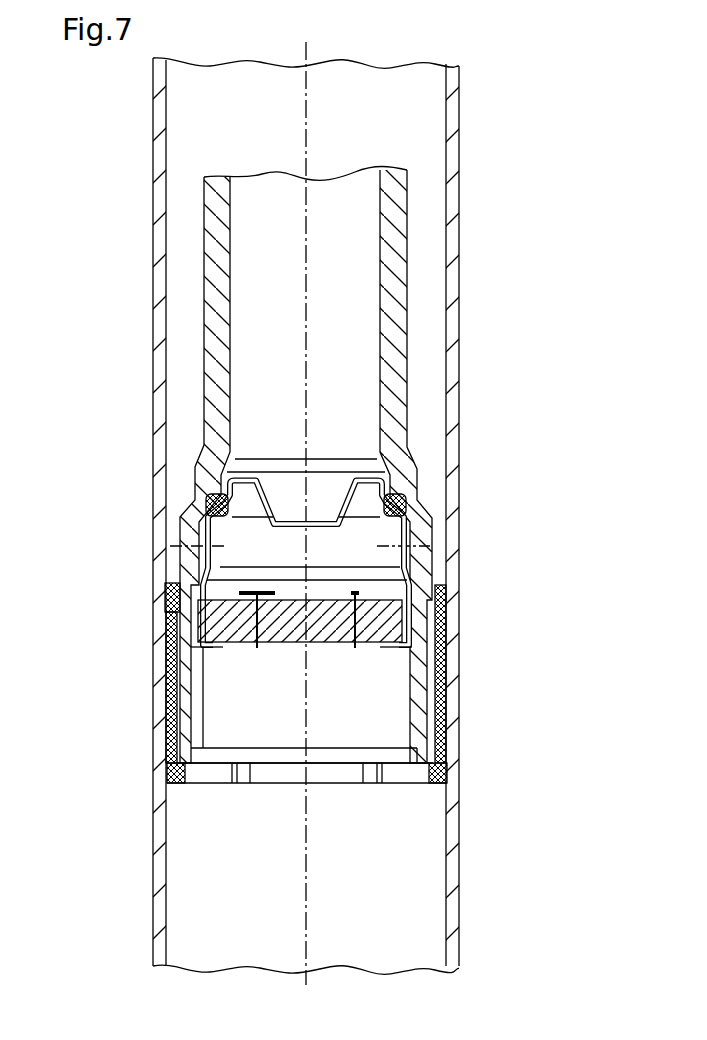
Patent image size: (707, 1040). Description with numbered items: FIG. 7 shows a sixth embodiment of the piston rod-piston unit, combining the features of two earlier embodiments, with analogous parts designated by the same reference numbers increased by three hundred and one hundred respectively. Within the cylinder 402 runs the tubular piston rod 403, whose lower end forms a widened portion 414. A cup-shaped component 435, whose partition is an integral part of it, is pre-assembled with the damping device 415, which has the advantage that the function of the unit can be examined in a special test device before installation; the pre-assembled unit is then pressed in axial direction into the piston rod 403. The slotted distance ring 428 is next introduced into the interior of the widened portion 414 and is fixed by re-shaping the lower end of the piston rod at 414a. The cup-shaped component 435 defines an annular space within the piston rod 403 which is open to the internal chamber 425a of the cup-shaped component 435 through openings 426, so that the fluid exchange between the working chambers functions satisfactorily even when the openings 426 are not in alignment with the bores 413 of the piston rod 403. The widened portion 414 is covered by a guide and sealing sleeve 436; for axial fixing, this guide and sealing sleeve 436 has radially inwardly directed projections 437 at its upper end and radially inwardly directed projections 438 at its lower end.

The cylinder 402 is at (453, 171).
The piston rod 403 is at (392, 258).
The bores 413 is at (420, 558).
The openings 426 is at (217, 538).
The cup-shaped component 435 is at (308, 520).
The internal chamber 425a is at (358, 538).
The damping device 415 is at (382, 620).
The radially inwardly directed projections 437 is at (178, 590).
The widened portion 414 is at (440, 627).
The guide and sealing sleeve 436 is at (428, 697).
The slotted distance ring 428 is at (360, 698).
The radially inwardly directed projections 438 is at (167, 770).
The re-shaped lower end of the piston rod 414a is at (417, 767).